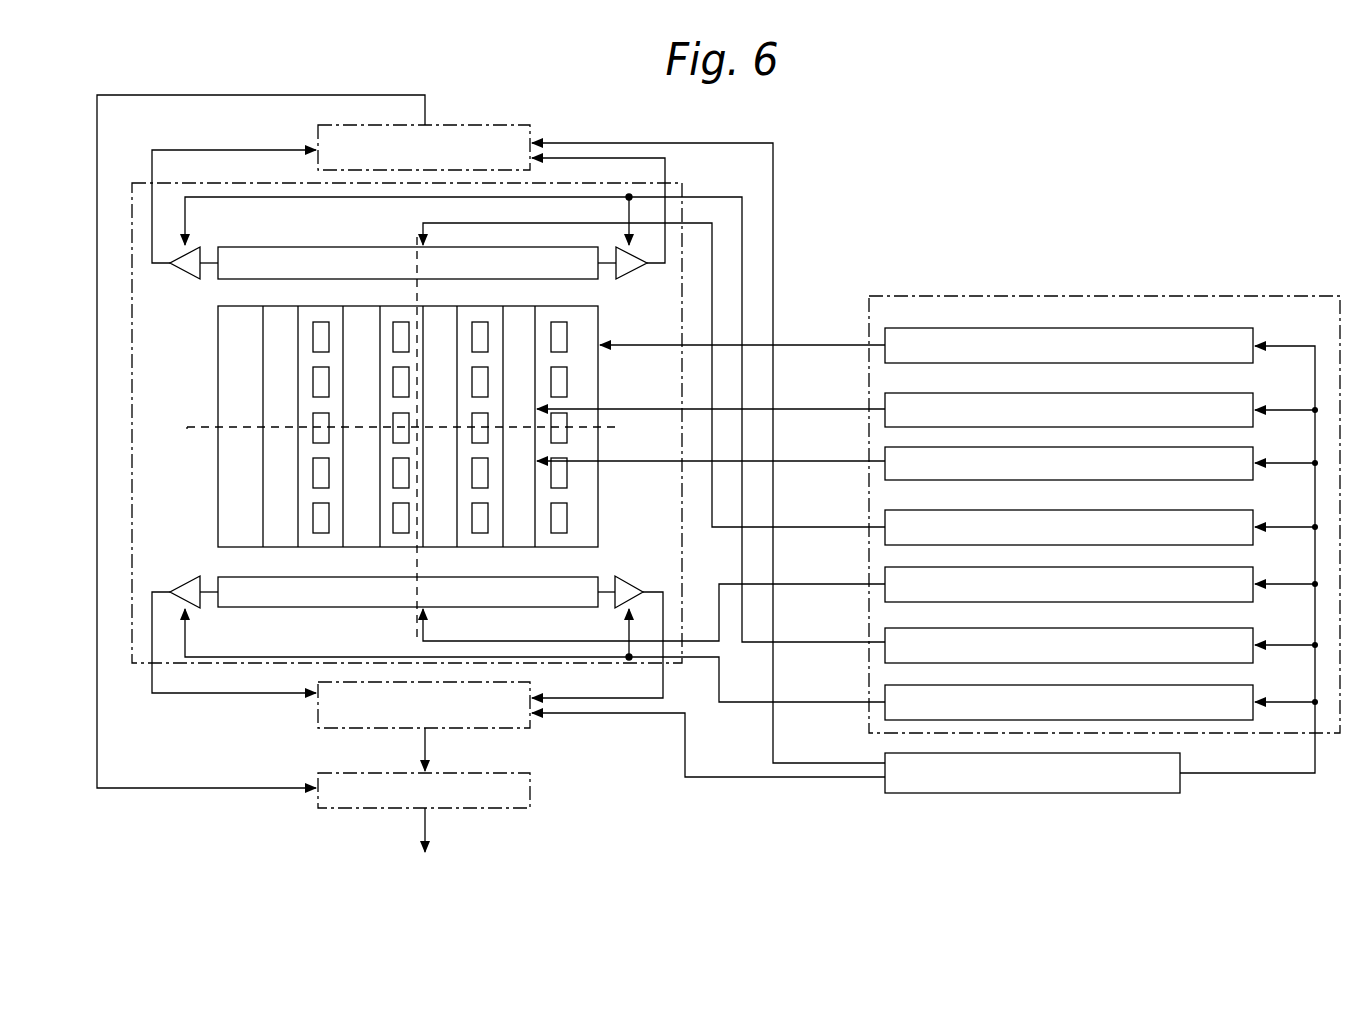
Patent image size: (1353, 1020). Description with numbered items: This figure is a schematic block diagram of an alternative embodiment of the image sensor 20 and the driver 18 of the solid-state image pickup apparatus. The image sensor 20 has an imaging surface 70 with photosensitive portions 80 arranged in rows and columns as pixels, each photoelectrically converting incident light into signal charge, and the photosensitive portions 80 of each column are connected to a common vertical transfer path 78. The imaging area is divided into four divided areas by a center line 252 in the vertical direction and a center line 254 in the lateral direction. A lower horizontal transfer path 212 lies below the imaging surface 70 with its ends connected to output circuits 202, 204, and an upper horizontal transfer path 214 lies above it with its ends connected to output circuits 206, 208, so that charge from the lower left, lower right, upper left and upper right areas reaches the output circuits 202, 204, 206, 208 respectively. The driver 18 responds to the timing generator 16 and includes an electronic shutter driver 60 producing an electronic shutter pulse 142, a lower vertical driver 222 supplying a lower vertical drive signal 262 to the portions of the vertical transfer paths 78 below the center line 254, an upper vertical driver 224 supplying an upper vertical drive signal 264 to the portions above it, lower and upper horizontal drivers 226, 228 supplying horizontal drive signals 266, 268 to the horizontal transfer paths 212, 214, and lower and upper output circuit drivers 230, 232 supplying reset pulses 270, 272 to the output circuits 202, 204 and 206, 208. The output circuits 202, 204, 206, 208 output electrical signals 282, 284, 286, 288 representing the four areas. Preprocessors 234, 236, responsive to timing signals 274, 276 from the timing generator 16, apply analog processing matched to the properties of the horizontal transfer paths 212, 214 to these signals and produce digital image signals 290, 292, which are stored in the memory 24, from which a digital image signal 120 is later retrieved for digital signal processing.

The timing generator 16 is at (1125, 795).
The driver 18 is at (1180, 296).
The image sensor 20 is at (682, 195).
The memory 24 is at (488, 810).
The electronic shutter driver 60 is at (1228, 328).
The imaging surface 70 is at (598, 388).
The vertical transfer path 78 is at (263, 388).
The photosensitive portion 80 is at (313, 337).
The digital image signal 120 is at (425, 821).
The electronic shutter pulse 142 is at (808, 345).
The output circuit 202 is at (180, 575).
The output circuit 204 is at (632, 575).
The output circuit 206 is at (178, 278).
The output circuit 208 is at (632, 280).
The lower horizontal transfer path 212 is at (310, 608).
The upper horizontal transfer path 214 is at (305, 245).
The lower vertical driver 222 is at (1228, 447).
The upper vertical driver 224 is at (1220, 393).
The lower horizontal driver 226 is at (1220, 567).
The upper horizontal driver 228 is at (1220, 510).
The lower output circuit driver 230 is at (1225, 685).
The upper output circuit driver 232 is at (1220, 628).
The preprocessor 234 is at (510, 730).
The preprocessor 236 is at (505, 125).
The center line 252 is at (410, 232).
The center line 254 is at (197, 430).
The lower vertical drive signal 262 is at (808, 461).
The upper vertical drive signal 264 is at (808, 409).
The horizontal drive signal 266 is at (808, 584).
The horizontal drive signal 268 is at (808, 527).
The reset pulse 270 is at (808, 702).
The reset pulse 272 is at (808, 642).
The timing signal 274 is at (815, 777).
The timing signal 276 is at (808, 763).
The electrical signal 282 is at (203, 695).
The electrical signal 284 is at (663, 685).
The electrical signal 286 is at (200, 148).
The electrical signal 288 is at (665, 170).
The digital image signal 290 is at (425, 750).
The digital image signal 292 is at (428, 112).